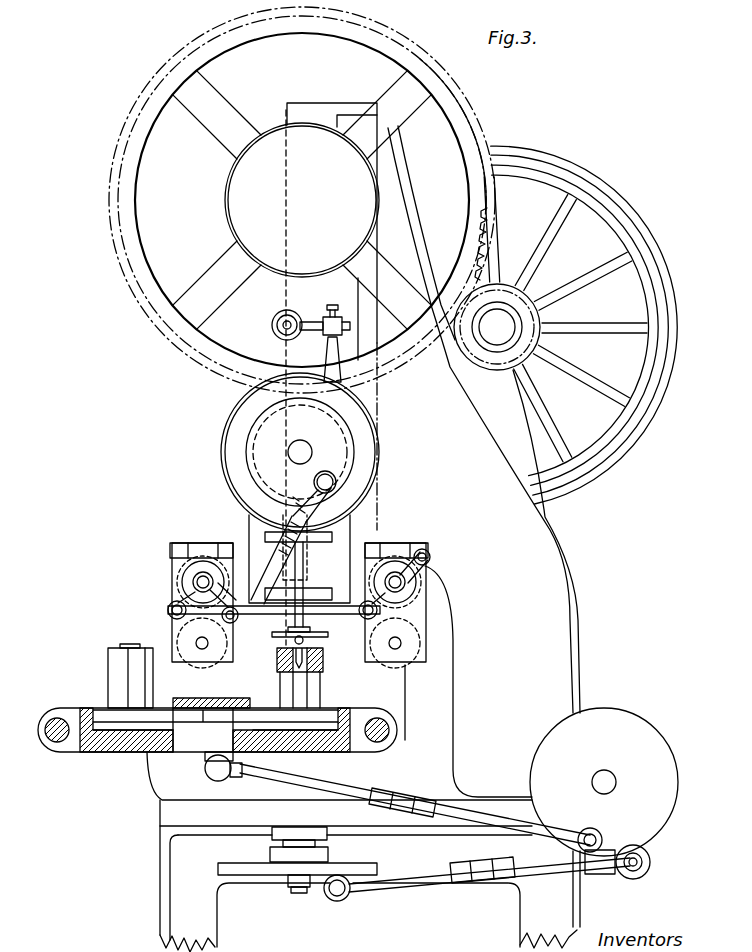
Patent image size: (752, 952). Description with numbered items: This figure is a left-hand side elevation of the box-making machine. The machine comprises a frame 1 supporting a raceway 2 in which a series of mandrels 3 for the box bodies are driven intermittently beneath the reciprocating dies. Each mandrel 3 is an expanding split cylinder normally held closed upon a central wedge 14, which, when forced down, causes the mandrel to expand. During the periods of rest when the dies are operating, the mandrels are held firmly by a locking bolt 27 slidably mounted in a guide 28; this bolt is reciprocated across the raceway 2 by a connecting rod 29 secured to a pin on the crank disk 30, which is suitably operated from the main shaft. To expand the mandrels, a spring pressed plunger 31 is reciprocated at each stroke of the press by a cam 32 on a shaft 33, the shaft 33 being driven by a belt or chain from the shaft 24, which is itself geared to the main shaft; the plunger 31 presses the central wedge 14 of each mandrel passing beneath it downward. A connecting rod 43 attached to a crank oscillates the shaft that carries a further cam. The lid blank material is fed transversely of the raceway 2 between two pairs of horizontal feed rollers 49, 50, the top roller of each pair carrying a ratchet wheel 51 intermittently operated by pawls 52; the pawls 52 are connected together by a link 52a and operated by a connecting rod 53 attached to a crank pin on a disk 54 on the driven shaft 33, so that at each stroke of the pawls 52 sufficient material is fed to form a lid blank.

The frame 1 is at (368, 876).
The raceway 2 is at (95, 751).
The mandrel 3 is at (118, 675).
The central wedge 14 is at (323, 658).
The shaft 24 is at (302, 200).
The locking bolt 27 is at (240, 716).
The guide 28 is at (203, 700).
The connecting rod 29 is at (350, 802).
The crank disk 30 is at (604, 782).
The spring pressed plunger 31 is at (302, 560).
The cam 32 is at (337, 446).
The shaft 33 is at (305, 455).
The connecting rod 43 is at (405, 886).
The feed rollers 49 is at (176, 608).
The feed rollers 50 is at (413, 586).
The ratchet wheel 51 is at (207, 562).
The pawl 52 is at (198, 584).
The link 52a is at (258, 614).
The connecting rod 53 is at (262, 562).
The disk 54 is at (240, 446).